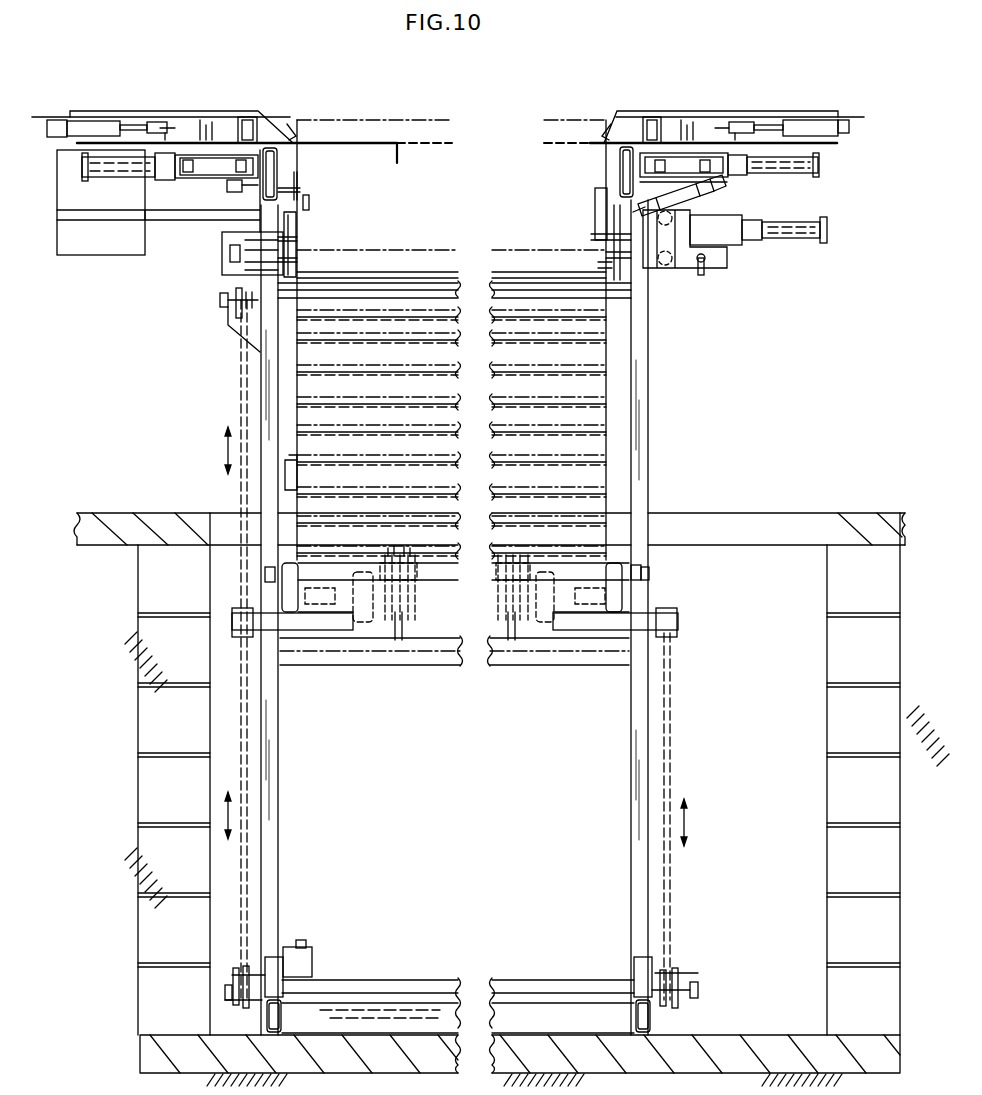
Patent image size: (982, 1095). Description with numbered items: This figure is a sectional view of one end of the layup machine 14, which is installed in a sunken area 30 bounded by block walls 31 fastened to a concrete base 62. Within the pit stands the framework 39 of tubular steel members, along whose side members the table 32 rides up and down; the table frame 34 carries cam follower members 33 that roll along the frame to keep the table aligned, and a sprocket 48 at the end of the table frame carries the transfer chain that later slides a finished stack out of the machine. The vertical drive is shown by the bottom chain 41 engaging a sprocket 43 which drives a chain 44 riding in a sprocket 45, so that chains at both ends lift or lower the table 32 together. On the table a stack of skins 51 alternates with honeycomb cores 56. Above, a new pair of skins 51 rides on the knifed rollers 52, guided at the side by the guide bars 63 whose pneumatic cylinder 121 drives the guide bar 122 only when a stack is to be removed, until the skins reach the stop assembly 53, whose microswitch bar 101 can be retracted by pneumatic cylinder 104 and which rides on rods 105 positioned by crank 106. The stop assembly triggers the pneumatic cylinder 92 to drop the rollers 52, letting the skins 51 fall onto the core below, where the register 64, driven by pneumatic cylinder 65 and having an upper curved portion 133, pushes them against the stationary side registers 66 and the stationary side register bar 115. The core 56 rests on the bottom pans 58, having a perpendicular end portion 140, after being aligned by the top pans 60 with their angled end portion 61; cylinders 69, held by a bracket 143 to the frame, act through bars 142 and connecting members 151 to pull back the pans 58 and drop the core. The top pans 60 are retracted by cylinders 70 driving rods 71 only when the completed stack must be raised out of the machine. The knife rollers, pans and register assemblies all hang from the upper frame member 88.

The layup machine 14 is at (296, 57).
The sunken area 30 is at (716, 533).
The block walls 31 is at (833, 618).
The table 32 is at (388, 700).
The cam follower members 33 is at (650, 572).
The table frame 34 is at (362, 628).
The framework 39 is at (648, 458).
The bottom chain 41 is at (236, 975).
The sprocket 43 is at (248, 1005).
The chain 44 is at (248, 760).
The sprocket 45 is at (232, 307).
The sprocket 48 is at (408, 630).
The skins 51 is at (425, 372).
The knifed rollers 52 is at (303, 205).
The stop assembly 53 is at (745, 251).
The honeycomb core 56 is at (380, 120).
The bottom pans 58 is at (353, 143).
The top pans 60 is at (258, 112).
The angled end portion 61 is at (289, 130).
The concrete base 62 is at (768, 1035).
The guide bars 63 is at (306, 178).
The register 64 is at (302, 261).
The pneumatic cylinder 65 is at (228, 257).
The stationary side registers 66 is at (592, 261).
The cylinders 69 is at (116, 172).
The cylinders 70 is at (74, 123).
The rods 71 is at (132, 120).
The upper frame member 88 is at (279, 158).
The pneumatic cylinder 92 is at (707, 200).
The microswitch bar 101 is at (595, 209).
The pneumatic cylinder 104 is at (778, 238).
The rods 105 is at (664, 270).
The crank 106 is at (700, 275).
The stationary side register bar 115 is at (602, 250).
The pneumatic cylinder 121 is at (238, 185).
The guide bar 122 is at (300, 183).
The upper curved portion 133 is at (300, 237).
The perpendicular end portion 140 is at (402, 152).
The bars 142 is at (215, 160).
The bracket 143 is at (187, 156).
The connecting members 151 is at (185, 175).